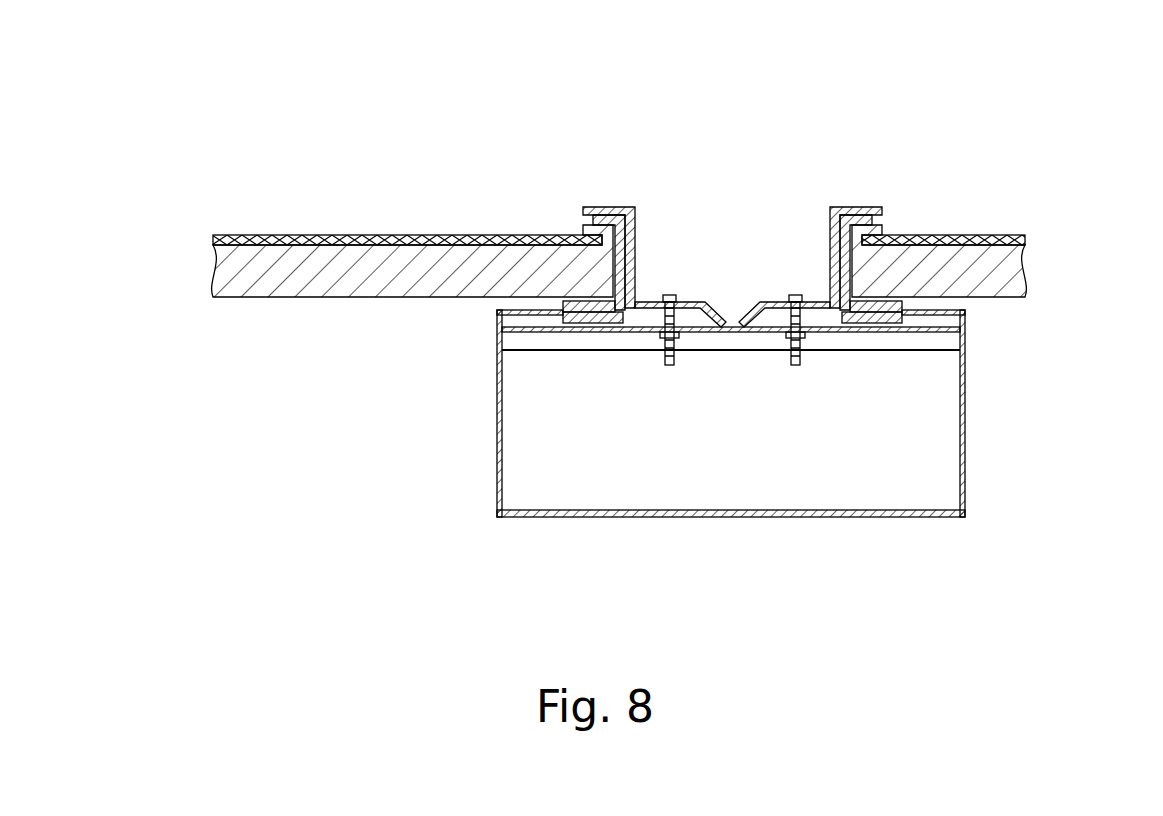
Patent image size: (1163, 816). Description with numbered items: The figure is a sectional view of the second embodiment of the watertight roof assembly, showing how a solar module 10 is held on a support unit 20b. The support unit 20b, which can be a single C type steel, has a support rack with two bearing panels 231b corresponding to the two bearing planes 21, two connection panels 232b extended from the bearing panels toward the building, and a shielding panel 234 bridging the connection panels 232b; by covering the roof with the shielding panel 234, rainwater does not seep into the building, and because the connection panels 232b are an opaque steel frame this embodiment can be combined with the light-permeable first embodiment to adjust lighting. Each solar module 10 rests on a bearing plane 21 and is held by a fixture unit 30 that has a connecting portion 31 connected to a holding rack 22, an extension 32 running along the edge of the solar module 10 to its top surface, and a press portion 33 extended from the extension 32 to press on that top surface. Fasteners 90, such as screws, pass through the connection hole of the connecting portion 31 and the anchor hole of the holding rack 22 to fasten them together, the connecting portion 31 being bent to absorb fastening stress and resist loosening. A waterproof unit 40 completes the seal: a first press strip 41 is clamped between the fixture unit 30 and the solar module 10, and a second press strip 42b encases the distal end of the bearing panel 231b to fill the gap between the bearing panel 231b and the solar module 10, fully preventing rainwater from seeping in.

The solar module 10 is at (326, 235).
The support unit 20b is at (694, 461).
The bearing plane 21 is at (573, 303).
The holding rack 22 is at (888, 352).
The fixture unit 30 is at (710, 184).
The connecting portion 31 is at (703, 300).
The extension 32 is at (638, 258).
The press portion 33 is at (603, 217).
The waterproof unit 40 is at (934, 163).
The first press strip 41 is at (852, 212).
The second press strip 42b is at (889, 302).
The fastener 90 is at (667, 366).
The bearing panel 231b is at (508, 313).
The connection panel 232b is at (965, 457).
The shielding panel 234 is at (740, 517).